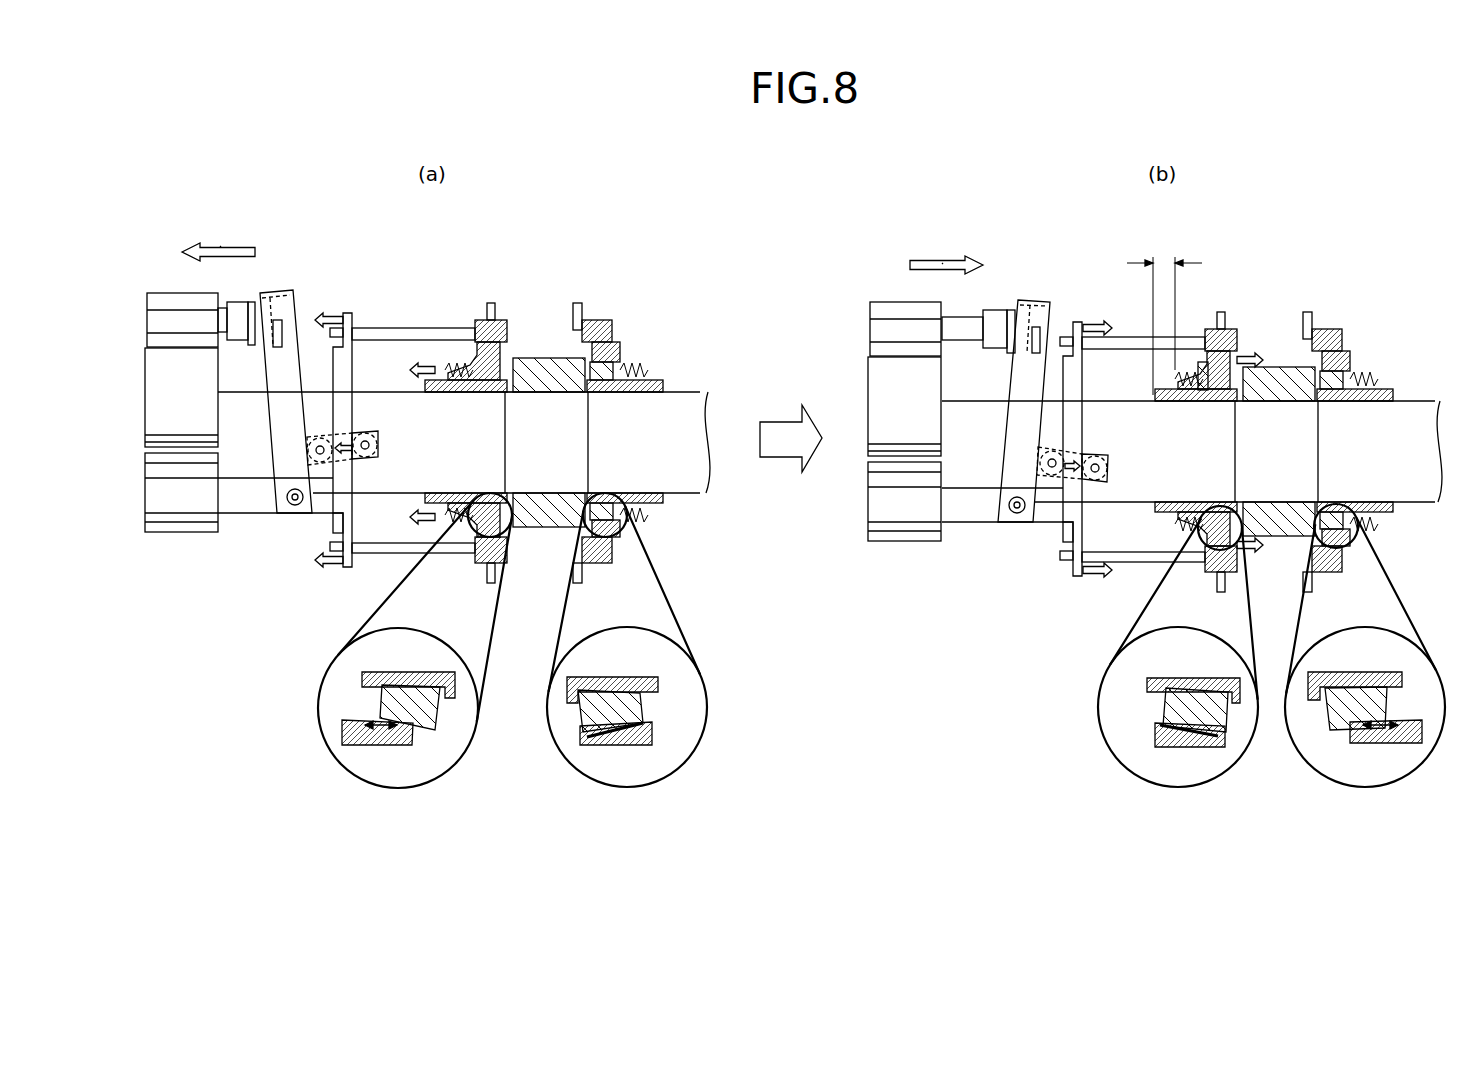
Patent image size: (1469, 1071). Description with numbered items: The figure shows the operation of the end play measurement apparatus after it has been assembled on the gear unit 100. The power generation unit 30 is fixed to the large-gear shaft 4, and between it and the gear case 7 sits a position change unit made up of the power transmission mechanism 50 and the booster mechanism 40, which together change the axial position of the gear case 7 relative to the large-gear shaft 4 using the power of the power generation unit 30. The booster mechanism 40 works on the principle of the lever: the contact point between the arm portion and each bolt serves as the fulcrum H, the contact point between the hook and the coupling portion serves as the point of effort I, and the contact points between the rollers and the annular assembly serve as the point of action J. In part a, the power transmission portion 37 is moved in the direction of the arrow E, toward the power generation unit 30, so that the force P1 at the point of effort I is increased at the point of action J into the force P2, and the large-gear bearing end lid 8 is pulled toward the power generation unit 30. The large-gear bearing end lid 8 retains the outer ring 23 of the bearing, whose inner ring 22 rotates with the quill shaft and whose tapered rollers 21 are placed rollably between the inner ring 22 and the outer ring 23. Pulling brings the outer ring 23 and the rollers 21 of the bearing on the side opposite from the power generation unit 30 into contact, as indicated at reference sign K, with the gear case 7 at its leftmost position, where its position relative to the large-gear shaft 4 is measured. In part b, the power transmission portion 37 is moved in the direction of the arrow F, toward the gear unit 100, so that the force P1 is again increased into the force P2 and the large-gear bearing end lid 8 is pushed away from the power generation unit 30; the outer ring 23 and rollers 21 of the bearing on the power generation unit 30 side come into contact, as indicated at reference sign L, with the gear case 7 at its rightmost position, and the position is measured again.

The large-gear shaft 4 is at (677, 482).
The gear case 7 is at (488, 305).
The large-gear bearing end lid 8 is at (500, 348).
The rollers 21 is at (643, 708).
The inner ring 22 is at (595, 678).
The outer ring 23 is at (652, 735).
The power generation unit 30 is at (172, 300).
The power transmission portion 37 is at (234, 302).
The booster mechanism 40 is at (278, 293).
The power transmission mechanism 50 is at (348, 313).
The gear unit 100 is at (561, 268).
The arrow E is at (221, 246).
The arrow F is at (943, 263).
The force P1 is at (591, 243).
The force P2 is at (343, 455).
The fulcrum H is at (648, 527).
The point of effort I is at (632, 356).
The point of action J is at (718, 439).
The reference sign K is at (611, 771).
The reference sign L is at (1194, 772).
The FIG. 8 a is at (636, 348).
The FIG. 8 b is at (1263, 333).